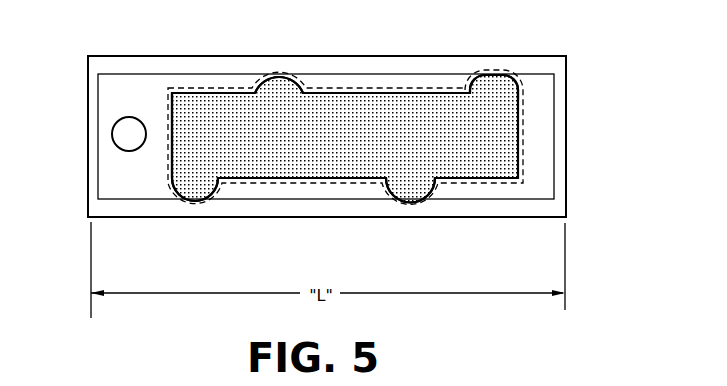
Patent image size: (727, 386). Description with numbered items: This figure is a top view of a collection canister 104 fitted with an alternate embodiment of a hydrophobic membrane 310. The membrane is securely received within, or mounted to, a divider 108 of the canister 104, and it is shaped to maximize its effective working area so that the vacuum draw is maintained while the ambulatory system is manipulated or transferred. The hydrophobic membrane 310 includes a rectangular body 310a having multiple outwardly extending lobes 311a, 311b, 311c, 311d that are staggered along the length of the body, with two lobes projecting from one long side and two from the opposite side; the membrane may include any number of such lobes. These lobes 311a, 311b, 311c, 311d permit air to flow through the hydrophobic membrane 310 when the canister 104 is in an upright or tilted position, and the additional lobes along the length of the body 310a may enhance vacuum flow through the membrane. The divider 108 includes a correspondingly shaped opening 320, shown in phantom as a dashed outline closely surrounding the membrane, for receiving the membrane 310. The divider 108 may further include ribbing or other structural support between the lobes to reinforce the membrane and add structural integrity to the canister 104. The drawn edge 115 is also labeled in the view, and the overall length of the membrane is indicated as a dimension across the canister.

The canister 104 is at (567, 102).
The divider 108 is at (554, 175).
The cover layer edge 115 is at (366, 56).
The hydrophobic membrane 310 is at (404, 114).
The body 310a is at (173, 160).
The lobe 311a is at (280, 84).
The lobe 311b is at (497, 81).
The lobe 311c is at (192, 197).
The lobe 311d is at (410, 197).
The opening 320 is at (190, 88).